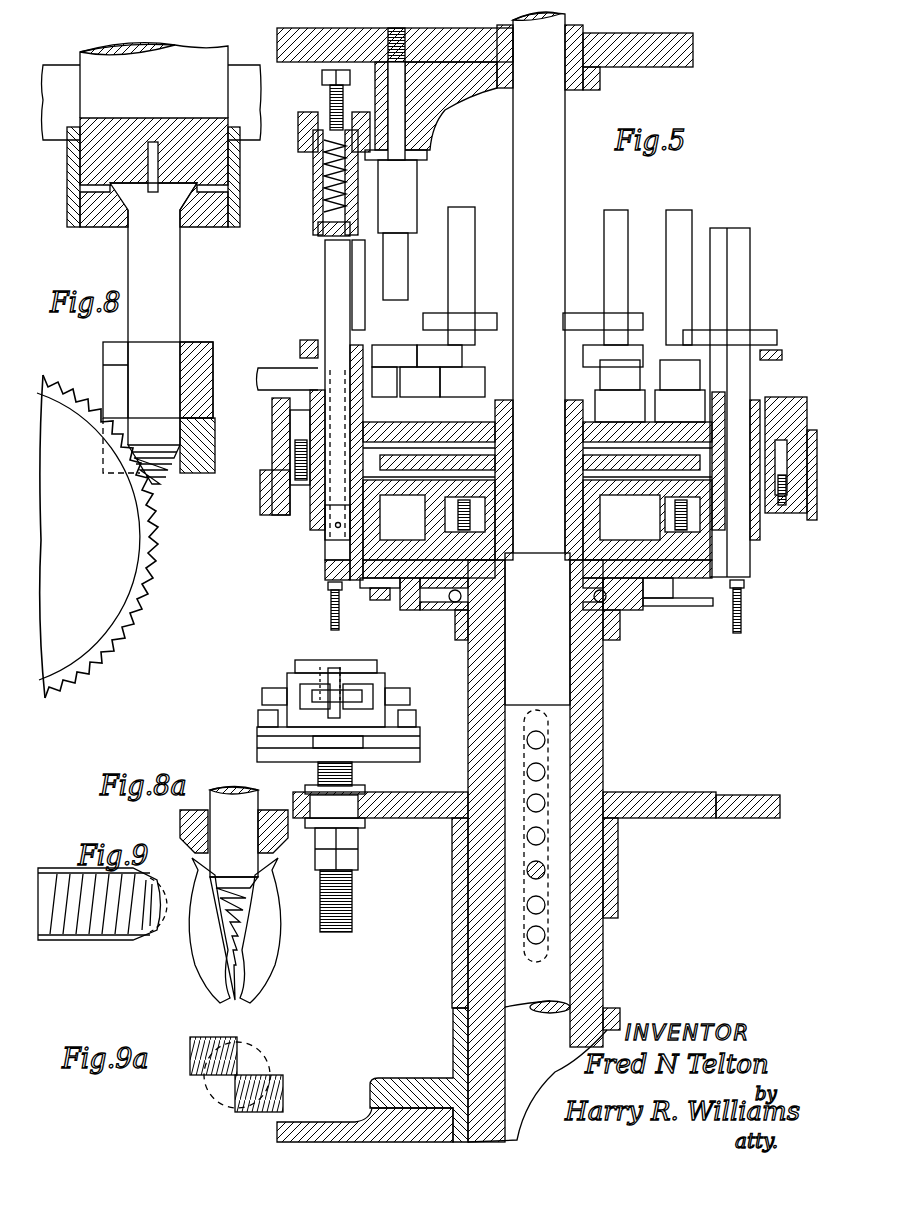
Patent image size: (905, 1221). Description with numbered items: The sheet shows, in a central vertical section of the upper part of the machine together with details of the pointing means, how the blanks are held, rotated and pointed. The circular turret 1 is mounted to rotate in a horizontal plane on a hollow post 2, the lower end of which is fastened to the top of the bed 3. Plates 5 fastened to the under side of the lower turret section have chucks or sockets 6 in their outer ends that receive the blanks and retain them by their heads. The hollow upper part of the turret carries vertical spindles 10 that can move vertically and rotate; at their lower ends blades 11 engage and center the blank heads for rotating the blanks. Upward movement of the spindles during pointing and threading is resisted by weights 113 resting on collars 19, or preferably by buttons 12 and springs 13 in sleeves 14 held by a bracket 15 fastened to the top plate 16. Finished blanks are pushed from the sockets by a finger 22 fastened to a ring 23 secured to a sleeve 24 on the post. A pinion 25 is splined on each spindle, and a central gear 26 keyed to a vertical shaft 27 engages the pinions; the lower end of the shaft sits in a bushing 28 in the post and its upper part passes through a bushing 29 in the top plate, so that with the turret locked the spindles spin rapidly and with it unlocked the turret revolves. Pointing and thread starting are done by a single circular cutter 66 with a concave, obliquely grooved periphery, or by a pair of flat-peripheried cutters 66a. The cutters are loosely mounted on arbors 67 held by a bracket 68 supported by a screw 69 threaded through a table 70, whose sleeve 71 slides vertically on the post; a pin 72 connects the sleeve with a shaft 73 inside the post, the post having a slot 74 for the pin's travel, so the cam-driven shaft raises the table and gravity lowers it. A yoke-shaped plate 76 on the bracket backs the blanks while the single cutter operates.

In FIG. 5, the circular turret 1 is at (262, 515).
In FIG. 5, the hollow post 2 is at (468, 940).
In FIG. 5, the bed 3 is at (330, 1122).
In FIG. 8, the plates 5 is at (212, 228).
In FIG. 5, the plates 5 is at (720, 600).
In FIG. 5, the chucks or sockets 6 is at (745, 590).
In FIG. 8, the spindles 10 is at (154, 80).
In FIG. 5, the spindles 10 is at (325, 300).
In FIG. 8, the blades 11 is at (157, 190).
In FIG. 5, the buttons 12 is at (318, 232).
In FIG. 5, the springs 13 is at (323, 196).
In FIG. 5, the sleeves 14 is at (313, 178).
In FIG. 5, the bracket 15 is at (385, 125).
In FIG. 5, the top plate 16 is at (693, 50).
In FIG. 5, the collars 19 is at (300, 346).
In FIG. 5, the finger 22 is at (660, 612).
In FIG. 5, the ring 23 is at (620, 640).
In FIG. 5, the sleeve 24 is at (603, 680).
In FIG. 5, the pinion 25 is at (282, 455).
In FIG. 5, the central gear 26 is at (600, 465).
In FIG. 5, the vertical shaft 27 is at (539, 282).
In FIG. 5, the bushing 28 is at (520, 560).
In FIG. 5, the bushing 29 is at (420, 125).
In FIG. 8, the circular cutter 66 is at (142, 567).
In FIG. 8A, the circular cutter 66 is at (290, 710).
In FIG. 9, the circular cutter 66 is at (108, 940).
In FIG. 9, the circular cutters 66a is at (215, 955).
In FIG. 9A, the circular cutters 66a is at (237, 1046).
In FIG. 8A, the arbors 67 is at (310, 681).
In FIG. 8A, the bracket 68 is at (258, 740).
In FIG. 8A, the screw 69 is at (318, 773).
In FIG. 5, the table 70 is at (420, 818).
In FIG. 5, the sleeve 71 is at (452, 876).
In FIG. 5, the pin 72 is at (548, 870).
In FIG. 5, the shaft 73 is at (537, 992).
In FIG. 5, the slot 74 is at (570, 922).
In FIG. 8, the yoke-shaped plate 76 is at (195, 470).
In FIG. 8A, the yoke-shaped plate 76 is at (320, 660).
In FIG. 5, the weights 113 is at (310, 322).